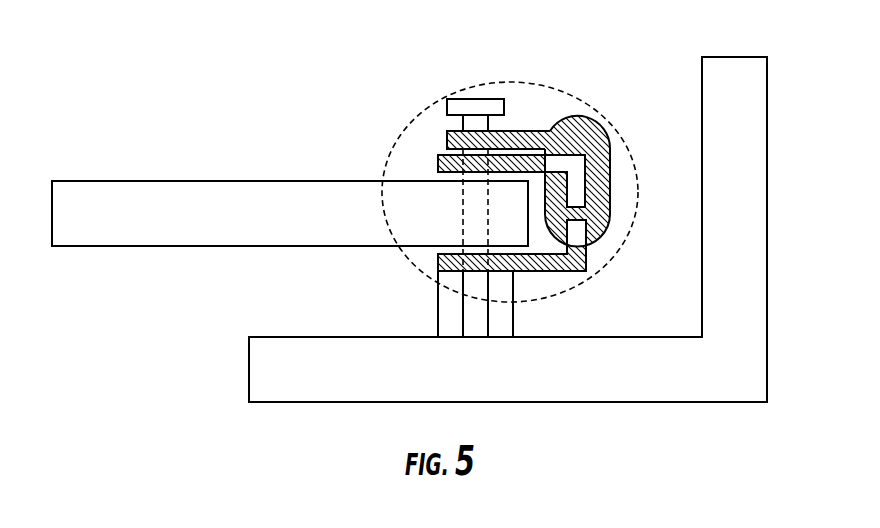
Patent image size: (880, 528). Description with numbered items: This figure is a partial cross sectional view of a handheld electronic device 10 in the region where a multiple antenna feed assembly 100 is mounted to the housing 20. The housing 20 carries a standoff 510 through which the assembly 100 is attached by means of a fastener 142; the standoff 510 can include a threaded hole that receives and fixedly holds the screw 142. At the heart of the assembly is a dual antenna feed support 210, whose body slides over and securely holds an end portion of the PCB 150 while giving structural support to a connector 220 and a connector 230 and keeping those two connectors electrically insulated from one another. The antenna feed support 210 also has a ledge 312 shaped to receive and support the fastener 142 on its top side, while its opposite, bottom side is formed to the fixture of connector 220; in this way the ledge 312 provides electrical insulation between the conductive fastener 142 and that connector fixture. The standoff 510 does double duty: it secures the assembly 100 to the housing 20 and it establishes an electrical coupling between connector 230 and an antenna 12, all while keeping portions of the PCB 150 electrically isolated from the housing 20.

The handheld electronic device 10 is at (327, 50).
The antenna 12 is at (299, 382).
The housing 20 is at (744, 111).
The multiple antenna feed assembly 100 is at (558, 90).
The fastener 142 is at (475, 99).
The PCB 150 is at (217, 228).
The antenna feed support 210 is at (597, 140).
The connector 220 is at (448, 165).
The connector 230 is at (543, 262).
The ledge 312 is at (460, 142).
The standoff 510 is at (443, 308).